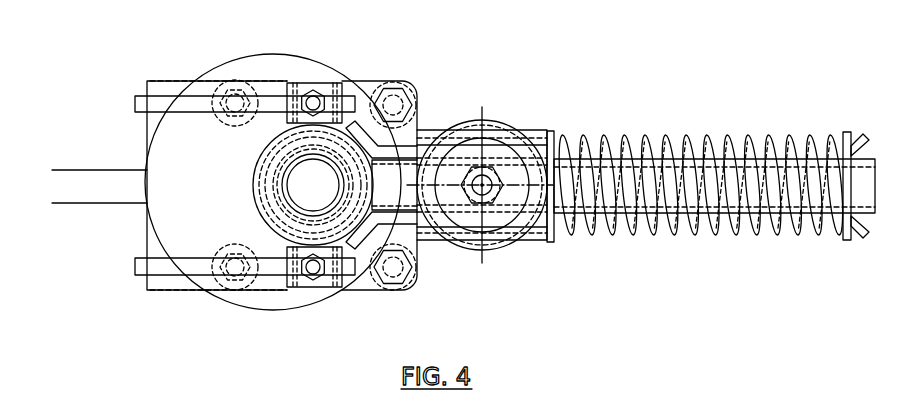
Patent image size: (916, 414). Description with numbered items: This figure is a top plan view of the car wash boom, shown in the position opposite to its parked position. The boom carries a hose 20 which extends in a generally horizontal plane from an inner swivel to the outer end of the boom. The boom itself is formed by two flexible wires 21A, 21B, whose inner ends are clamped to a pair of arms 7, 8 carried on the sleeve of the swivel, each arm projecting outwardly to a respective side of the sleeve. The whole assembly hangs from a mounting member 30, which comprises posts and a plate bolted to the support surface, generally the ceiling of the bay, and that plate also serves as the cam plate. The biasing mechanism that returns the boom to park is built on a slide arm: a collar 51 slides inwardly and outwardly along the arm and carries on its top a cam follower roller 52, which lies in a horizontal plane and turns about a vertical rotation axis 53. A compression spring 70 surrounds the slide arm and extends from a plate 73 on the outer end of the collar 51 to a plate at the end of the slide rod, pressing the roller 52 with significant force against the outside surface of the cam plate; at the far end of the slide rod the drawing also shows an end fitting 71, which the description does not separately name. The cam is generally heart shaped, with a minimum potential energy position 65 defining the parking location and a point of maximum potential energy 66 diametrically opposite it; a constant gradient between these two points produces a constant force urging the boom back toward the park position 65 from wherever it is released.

The arm 7 is at (342, 82).
The arm 8 is at (358, 290).
The hose 20 is at (100, 168).
The flexible wire 21A is at (137, 94).
The flexible wire 21B is at (137, 275).
The mounting member 30 is at (292, 232).
The collar 51 is at (537, 238).
The cam follower roller 52 is at (497, 225).
The vertical rotation axis 53 is at (483, 251).
The minimum potential energy position 65 is at (152, 184).
The point of maximum potential energy 66 is at (368, 234).
The spring 70 is at (733, 135).
The retaining pin 71 is at (856, 132).
The plate 73 is at (553, 131).